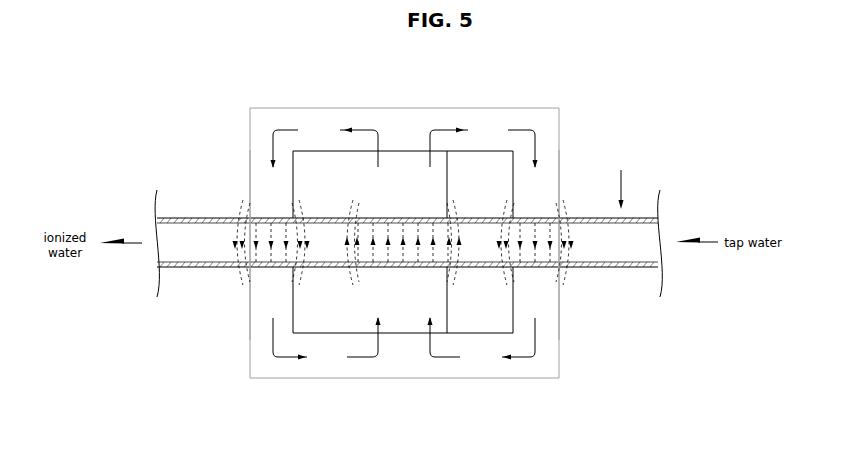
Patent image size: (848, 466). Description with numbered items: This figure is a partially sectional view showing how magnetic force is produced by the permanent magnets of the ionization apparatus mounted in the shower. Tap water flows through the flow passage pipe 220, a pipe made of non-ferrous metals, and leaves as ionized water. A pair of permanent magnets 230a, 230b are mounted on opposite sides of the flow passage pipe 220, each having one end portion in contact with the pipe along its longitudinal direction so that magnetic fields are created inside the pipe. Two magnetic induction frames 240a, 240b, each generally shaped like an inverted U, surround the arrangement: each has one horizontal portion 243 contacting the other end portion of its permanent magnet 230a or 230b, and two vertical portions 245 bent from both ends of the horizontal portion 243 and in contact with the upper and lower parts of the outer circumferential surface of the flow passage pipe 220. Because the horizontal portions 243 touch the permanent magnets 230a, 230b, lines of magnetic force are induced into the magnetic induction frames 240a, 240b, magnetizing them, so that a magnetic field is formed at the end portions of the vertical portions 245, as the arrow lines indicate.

The flow passage pipe 220 is at (203, 218).
The permanent magnet 230a is at (433, 185).
The permanent magnet 230b is at (433, 302).
The magnetic induction frame 240a is at (403, 107).
The magnetic induction frame 240b is at (403, 378).
The horizontal portion 243 is at (490, 108).
The vertical portion 245 is at (258, 183).